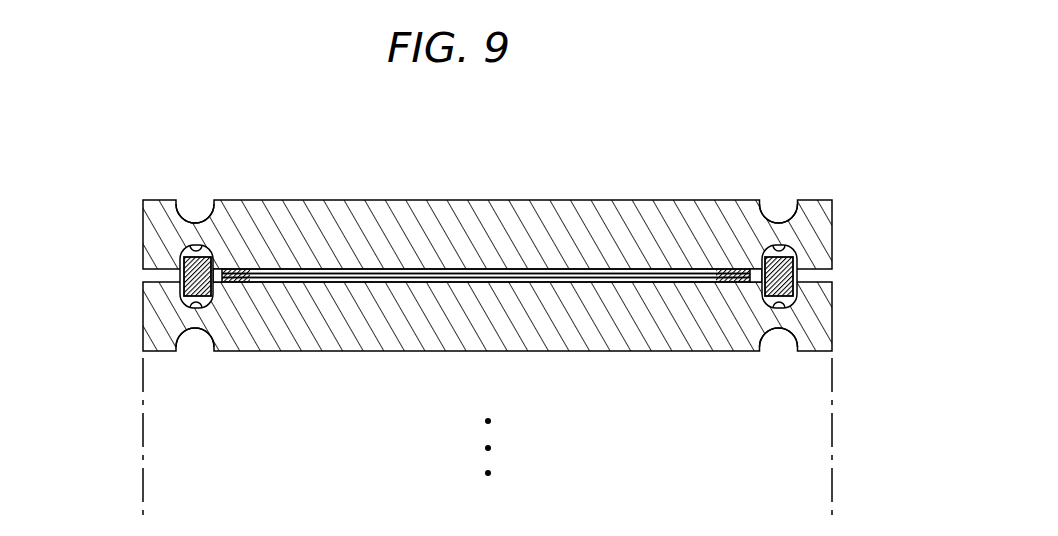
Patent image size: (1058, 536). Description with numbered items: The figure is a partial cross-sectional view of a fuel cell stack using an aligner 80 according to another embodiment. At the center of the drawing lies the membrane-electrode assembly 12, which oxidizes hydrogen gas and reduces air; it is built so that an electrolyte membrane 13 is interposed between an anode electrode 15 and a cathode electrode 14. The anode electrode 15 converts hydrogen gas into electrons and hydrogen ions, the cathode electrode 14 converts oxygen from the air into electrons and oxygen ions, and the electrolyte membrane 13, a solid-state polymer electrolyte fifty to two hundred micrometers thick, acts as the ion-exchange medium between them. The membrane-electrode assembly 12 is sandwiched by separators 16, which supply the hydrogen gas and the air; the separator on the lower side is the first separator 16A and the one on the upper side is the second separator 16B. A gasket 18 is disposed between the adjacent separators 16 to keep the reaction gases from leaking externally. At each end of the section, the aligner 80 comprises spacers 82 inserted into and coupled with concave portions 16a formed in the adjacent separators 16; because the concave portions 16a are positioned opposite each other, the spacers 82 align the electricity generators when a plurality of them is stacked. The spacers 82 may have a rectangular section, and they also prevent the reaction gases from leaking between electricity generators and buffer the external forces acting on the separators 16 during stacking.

The membrane-electrode assembly 12 is at (486, 364).
The electrolyte membrane 13 is at (397, 277).
The cathode electrode 14 is at (437, 270).
The anode electrode 15 is at (353, 281).
The separator 16 is at (560, 415).
The first separator 16A is at (641, 327).
The second separator 16B is at (569, 254).
The concave portion 16a is at (208, 229).
The gasket 18 is at (232, 283).
The aligner 80 is at (172, 274).
The spacer 82 is at (180, 251).